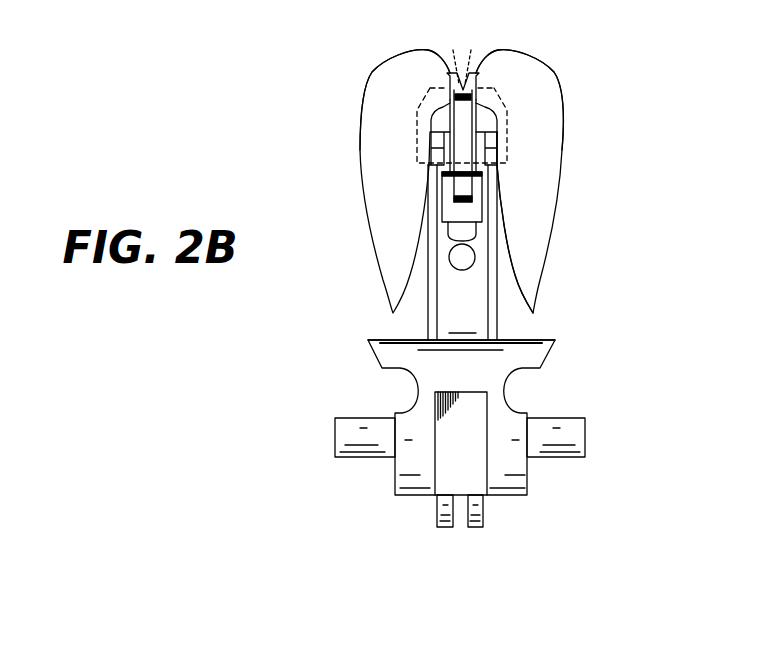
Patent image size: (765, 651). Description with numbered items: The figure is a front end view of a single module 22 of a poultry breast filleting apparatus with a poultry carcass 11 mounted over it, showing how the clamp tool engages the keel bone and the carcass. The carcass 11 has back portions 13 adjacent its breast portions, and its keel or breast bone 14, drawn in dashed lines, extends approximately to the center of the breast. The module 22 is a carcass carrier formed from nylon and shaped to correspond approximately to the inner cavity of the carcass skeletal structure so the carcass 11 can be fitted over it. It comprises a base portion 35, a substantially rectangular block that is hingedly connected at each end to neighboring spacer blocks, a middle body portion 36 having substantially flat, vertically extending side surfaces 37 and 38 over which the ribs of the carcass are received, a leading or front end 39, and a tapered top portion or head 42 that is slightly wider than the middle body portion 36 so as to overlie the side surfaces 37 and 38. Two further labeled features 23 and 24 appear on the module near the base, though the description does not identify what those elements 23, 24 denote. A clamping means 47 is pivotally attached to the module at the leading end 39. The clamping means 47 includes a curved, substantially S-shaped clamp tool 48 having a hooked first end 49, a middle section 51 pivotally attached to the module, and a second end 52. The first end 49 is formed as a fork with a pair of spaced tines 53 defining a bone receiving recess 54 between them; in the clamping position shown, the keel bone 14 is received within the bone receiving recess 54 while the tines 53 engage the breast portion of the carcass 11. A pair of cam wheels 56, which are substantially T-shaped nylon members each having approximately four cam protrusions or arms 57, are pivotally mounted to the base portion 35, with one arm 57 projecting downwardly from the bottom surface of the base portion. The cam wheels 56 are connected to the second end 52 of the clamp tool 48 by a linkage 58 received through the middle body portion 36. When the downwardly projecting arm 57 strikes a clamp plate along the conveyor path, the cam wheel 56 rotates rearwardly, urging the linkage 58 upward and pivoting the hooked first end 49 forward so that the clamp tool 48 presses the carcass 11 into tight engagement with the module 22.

The poultry carcass 11 is at (549, 162).
The back portion 13 is at (527, 278).
The keel or breast bone 14 is at (457, 47).
The module 22 is at (294, 383).
The side inlet port 23 is at (573, 433).
The base body 24 is at (508, 392).
The base portion 35 is at (513, 424).
The middle body portion 36 is at (430, 331).
The side surface 37 is at (428, 323).
The side surface 38 is at (497, 330).
The leading or front end 39 is at (452, 306).
The tapered top portion or head 42 is at (418, 123).
The clamping means 47 is at (509, 88).
The clamp tool 48 is at (476, 118).
The hooked first end 49 is at (453, 108).
The middle section 51 is at (465, 137).
The second end 52 is at (465, 185).
The tines 53 is at (443, 78).
The bone receiving recess 54 is at (468, 72).
The cam wheel 56 is at (485, 529).
The cam protrusion or arm 57 is at (437, 515).
The linkage 58 is at (473, 258).